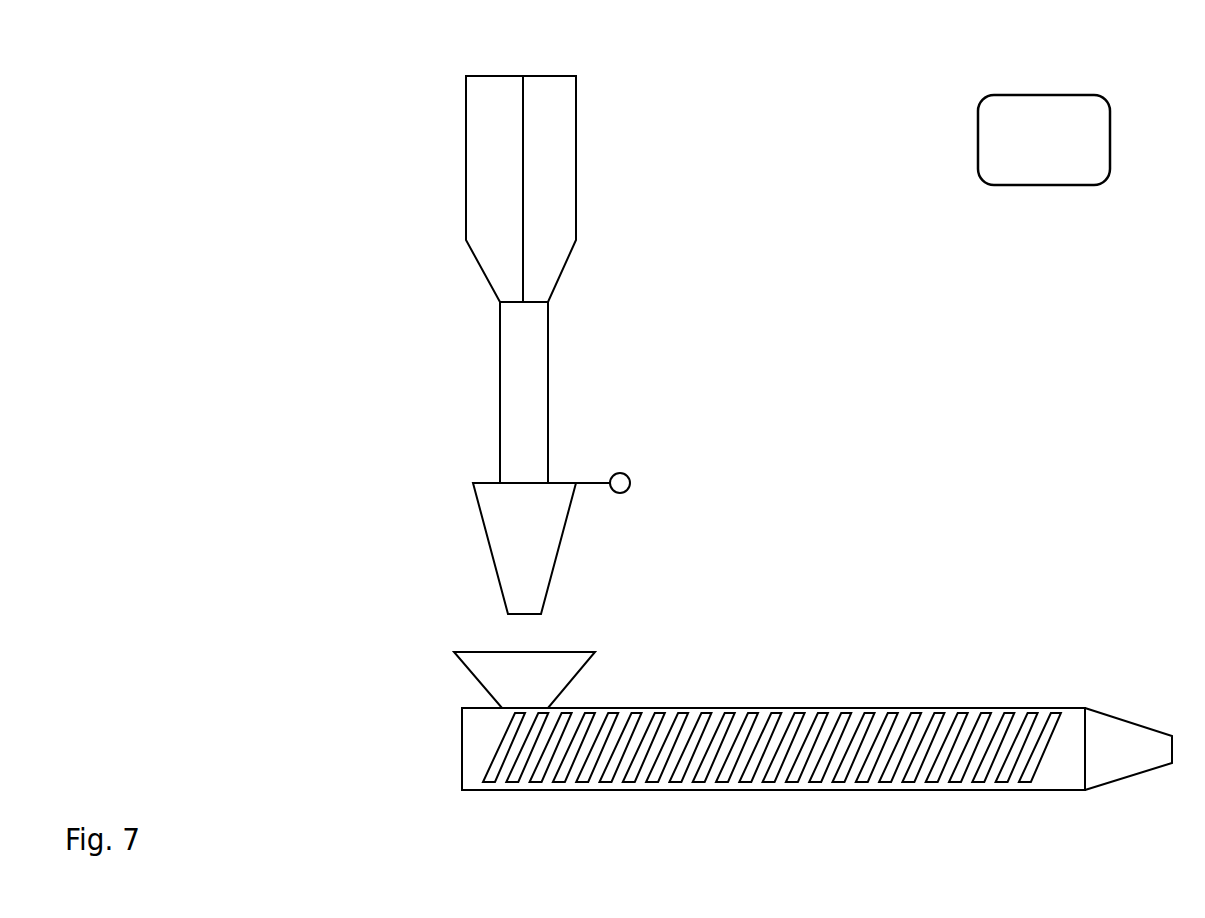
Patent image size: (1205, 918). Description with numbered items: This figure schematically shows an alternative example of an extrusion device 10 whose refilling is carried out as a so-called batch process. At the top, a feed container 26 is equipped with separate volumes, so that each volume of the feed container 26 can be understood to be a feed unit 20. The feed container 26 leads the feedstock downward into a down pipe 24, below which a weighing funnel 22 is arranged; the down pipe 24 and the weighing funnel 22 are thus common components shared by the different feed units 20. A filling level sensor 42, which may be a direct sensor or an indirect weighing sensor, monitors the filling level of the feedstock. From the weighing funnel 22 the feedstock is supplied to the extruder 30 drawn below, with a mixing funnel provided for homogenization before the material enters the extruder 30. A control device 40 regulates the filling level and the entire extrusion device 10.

The extrusion device 10 is at (366, 113).
The feed unit 20 is at (612, 191).
The feed container 26 is at (576, 93).
The down pipe 24 is at (548, 343).
The weighing funnel 22 is at (548, 597).
The filling level sensor 42 is at (625, 473).
The extruder 30 is at (998, 708).
The control device 40 is at (1033, 95).